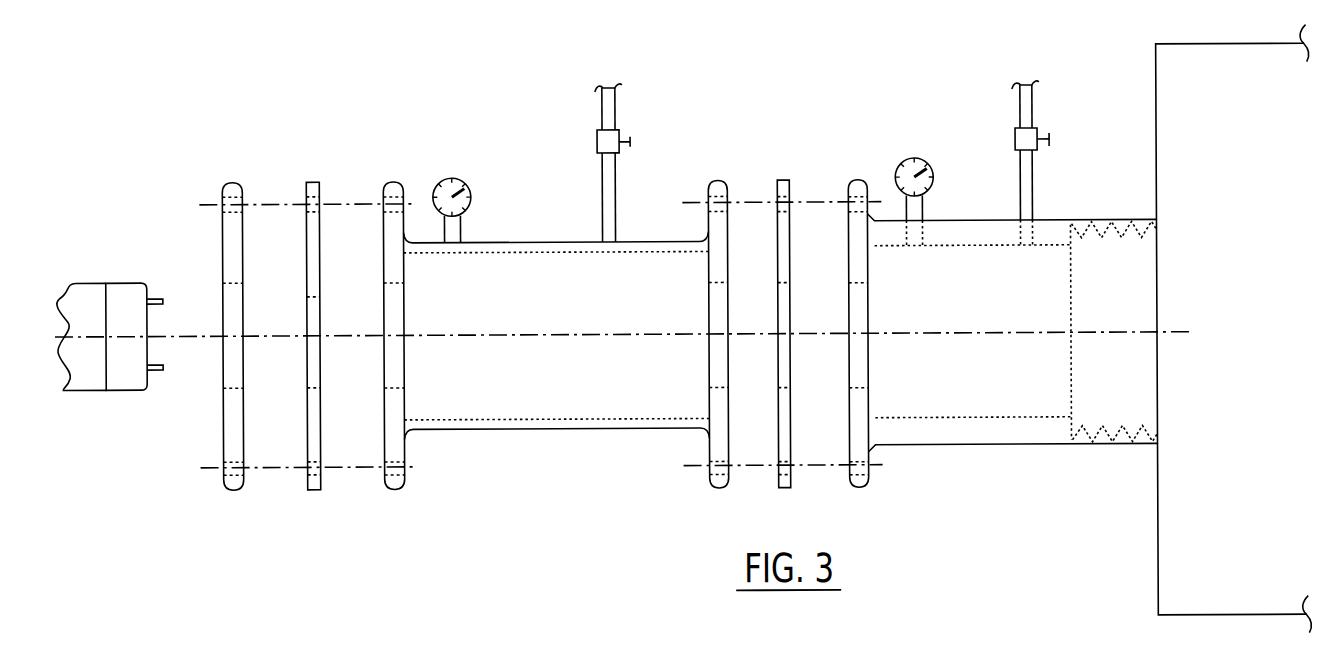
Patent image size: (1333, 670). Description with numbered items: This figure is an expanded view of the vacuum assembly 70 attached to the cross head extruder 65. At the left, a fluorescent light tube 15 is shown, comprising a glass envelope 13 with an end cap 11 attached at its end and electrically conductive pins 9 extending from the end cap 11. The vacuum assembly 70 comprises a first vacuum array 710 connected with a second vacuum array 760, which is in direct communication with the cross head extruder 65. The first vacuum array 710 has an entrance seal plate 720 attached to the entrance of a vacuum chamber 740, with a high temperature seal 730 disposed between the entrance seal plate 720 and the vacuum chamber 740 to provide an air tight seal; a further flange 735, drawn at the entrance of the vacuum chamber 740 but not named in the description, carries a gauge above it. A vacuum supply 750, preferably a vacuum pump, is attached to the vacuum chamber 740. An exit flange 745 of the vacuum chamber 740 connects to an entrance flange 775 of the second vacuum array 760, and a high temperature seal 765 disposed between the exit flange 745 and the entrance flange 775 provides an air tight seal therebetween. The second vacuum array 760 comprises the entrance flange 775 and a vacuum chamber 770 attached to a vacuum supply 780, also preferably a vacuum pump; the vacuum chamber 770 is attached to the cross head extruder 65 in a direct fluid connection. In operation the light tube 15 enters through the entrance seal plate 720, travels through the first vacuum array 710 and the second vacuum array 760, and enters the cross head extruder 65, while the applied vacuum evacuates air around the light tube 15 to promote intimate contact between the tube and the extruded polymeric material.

The electrically conductive pins 9 is at (157, 296).
The end cap 11 is at (118, 381).
The glass envelope 13 is at (82, 380).
The fluorescent light tube 15 is at (110, 326).
The cross head extruder 65 is at (1236, 271).
The vacuum assembly 70 is at (533, 72).
The first vacuum array 710 is at (500, 312).
The entrance seal plate 720 is at (235, 176).
The high temperature seal 730 is at (315, 177).
The second flange with pressure gauge 735 is at (393, 179).
The vacuum chamber 740 is at (557, 240).
The exit flange 745 is at (720, 178).
The vacuum supply 750 is at (623, 130).
The second vacuum array 760 is at (967, 309).
The high temperature seal 765 is at (785, 178).
The vacuum chamber 770 is at (998, 220).
The entrance flange 775 is at (860, 179).
The vacuum supply 780 is at (1041, 132).